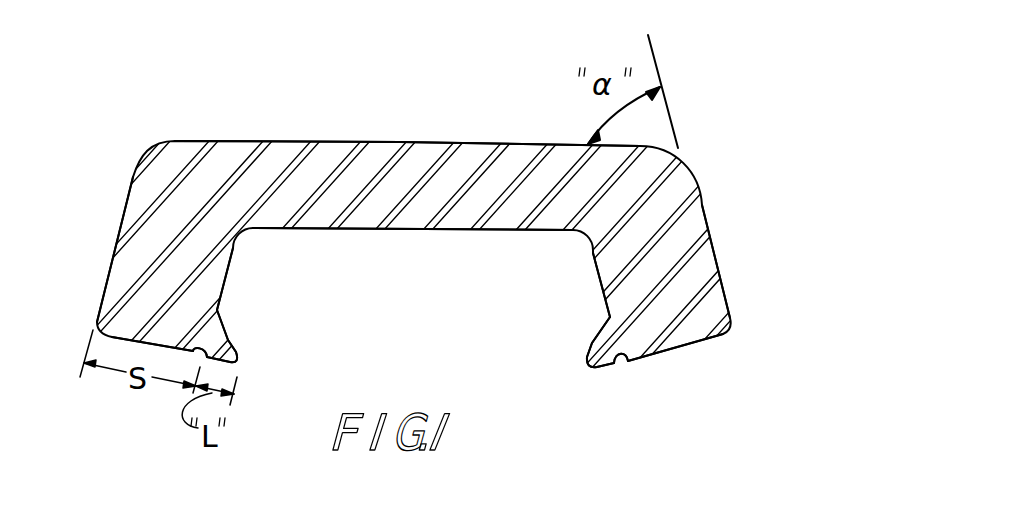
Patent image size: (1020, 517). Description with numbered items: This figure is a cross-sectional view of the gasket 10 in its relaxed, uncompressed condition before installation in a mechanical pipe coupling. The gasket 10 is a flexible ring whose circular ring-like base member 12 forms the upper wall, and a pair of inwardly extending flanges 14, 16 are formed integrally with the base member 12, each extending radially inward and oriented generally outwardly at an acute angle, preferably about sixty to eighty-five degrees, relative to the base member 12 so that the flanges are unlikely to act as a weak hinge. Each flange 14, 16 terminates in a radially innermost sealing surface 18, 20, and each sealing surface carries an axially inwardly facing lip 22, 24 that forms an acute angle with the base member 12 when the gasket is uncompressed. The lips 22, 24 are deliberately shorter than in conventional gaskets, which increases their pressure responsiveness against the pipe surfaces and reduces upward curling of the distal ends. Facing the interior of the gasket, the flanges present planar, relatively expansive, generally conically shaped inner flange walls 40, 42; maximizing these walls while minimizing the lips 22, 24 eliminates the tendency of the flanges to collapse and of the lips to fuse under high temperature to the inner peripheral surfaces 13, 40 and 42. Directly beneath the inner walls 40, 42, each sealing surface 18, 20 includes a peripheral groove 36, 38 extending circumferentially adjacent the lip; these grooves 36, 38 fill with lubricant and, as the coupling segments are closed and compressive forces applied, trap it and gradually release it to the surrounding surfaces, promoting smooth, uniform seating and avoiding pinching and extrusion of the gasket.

The gasket 10 is at (433, 143).
The ring-like base member 12 is at (312, 141).
The inner peripheral surface 13 is at (380, 231).
The flange 14 is at (110, 258).
The flange 16 is at (720, 265).
The sealing surface 18 is at (110, 362).
The sealing surface 20 is at (692, 350).
The lip 22 is at (232, 334).
The lip 24 is at (593, 337).
The peripheral groove 36 is at (203, 356).
The peripheral groove 38 is at (620, 366).
The inner flange wall 40 is at (227, 276).
The inner flange wall 42 is at (598, 280).